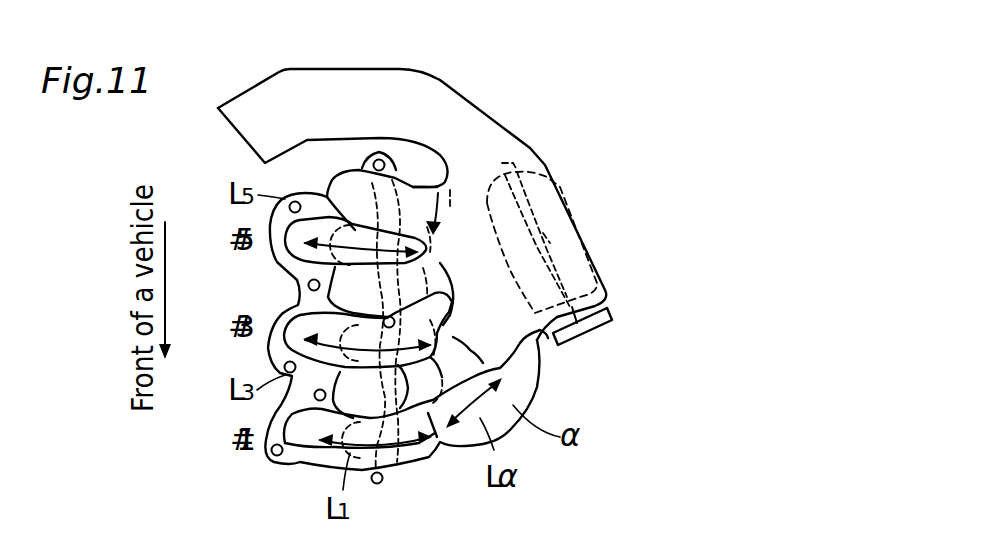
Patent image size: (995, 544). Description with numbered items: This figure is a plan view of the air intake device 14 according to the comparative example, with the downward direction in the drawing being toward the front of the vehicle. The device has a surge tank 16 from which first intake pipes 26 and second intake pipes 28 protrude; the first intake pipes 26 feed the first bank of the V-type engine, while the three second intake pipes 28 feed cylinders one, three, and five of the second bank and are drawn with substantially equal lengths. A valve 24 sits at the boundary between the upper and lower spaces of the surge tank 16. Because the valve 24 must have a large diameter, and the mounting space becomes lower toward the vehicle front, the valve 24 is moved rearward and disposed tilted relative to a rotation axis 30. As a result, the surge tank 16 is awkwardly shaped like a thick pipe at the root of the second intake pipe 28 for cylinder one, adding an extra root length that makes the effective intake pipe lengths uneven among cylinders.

The air intake device 14 is at (535, 90).
The surge tank 16 is at (536, 345).
The valve 24 is at (515, 165).
The first intake pipes 26 is at (410, 187).
The second intake pipes 28 is at (392, 232).
The rotation axis 30 is at (547, 233).